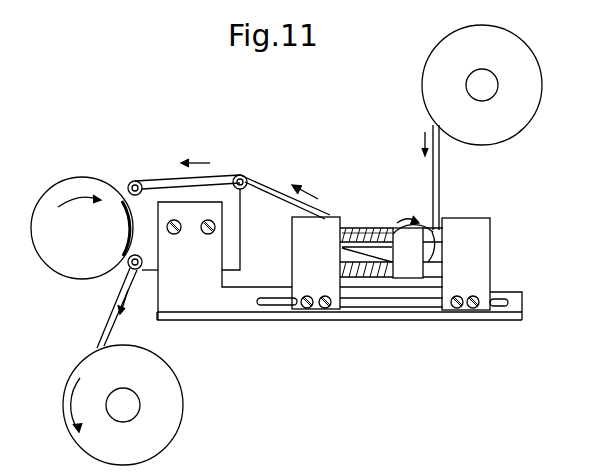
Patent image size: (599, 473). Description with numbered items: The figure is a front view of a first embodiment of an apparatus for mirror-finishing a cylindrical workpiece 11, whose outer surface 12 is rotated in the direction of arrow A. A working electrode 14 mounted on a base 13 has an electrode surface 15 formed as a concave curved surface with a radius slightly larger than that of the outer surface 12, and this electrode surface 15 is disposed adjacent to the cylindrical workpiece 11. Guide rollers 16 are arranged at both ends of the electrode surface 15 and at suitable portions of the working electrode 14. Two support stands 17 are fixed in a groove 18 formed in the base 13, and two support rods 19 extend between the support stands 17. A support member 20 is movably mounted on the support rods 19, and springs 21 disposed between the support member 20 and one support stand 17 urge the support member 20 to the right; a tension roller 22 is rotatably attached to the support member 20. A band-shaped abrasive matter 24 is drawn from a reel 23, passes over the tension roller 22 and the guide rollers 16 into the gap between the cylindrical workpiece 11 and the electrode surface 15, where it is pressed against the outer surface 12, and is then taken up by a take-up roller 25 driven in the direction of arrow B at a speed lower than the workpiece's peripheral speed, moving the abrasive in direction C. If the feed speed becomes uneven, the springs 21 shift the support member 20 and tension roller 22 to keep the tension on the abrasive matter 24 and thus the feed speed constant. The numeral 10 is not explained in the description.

The bearing block 10 is at (350, 292).
The cylindrical workpiece 11 is at (62, 265).
The outer surface 12 is at (82, 177).
The base 13 is at (222, 320).
The working electrode 14 is at (178, 178).
The electrode surface 15 is at (133, 238).
The guide rollers 16 is at (135, 181).
The support stands 17 is at (312, 276).
The groove 18 is at (380, 303).
The support rods 19 is at (370, 228).
The support member 20 is at (410, 279).
The springs 21 is at (352, 228).
The tension roller 22 is at (407, 210).
The reel 23 is at (530, 112).
The abrasive matter 24 is at (440, 176).
The take-up roller 25 is at (176, 411).